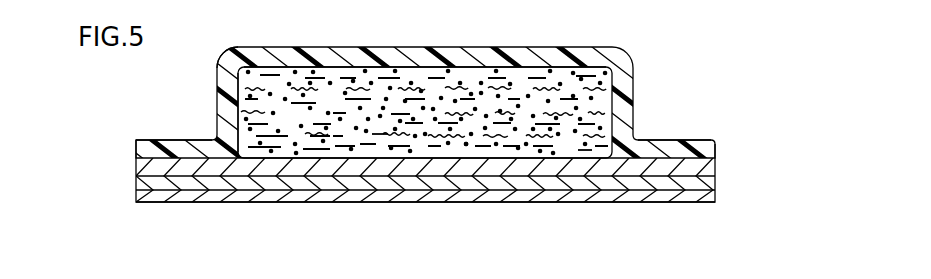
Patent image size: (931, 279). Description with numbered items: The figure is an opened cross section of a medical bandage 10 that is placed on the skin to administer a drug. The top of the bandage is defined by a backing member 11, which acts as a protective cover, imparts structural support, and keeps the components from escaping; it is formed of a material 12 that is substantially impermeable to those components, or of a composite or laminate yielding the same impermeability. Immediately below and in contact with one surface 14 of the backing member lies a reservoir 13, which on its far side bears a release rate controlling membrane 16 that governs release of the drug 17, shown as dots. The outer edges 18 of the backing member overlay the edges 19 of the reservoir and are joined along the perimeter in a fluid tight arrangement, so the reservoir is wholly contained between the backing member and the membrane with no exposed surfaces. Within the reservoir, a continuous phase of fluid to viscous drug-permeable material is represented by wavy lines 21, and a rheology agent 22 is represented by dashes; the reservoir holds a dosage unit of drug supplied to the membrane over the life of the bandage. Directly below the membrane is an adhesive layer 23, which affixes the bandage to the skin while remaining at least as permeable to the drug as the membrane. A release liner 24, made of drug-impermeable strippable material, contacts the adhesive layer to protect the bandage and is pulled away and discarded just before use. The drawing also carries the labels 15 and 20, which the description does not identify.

The medical bandage 10 is at (178, 79).
The backing member 11 is at (632, 68).
The material 12 is at (403, 47).
The reservoir 13 is at (603, 103).
The surface 14 is at (466, 70).
The bottom interface layer 15 is at (585, 150).
The release rate controlling membrane 16 is at (651, 168).
The drug 17 is at (466, 148).
The outer edges 18 is at (217, 78).
The edges 19 is at (237, 110).
The laminated base sheet 20 is at (147, 163).
The wavy lines 21 is at (372, 134).
The rheology agent 22 is at (322, 148).
The adhesive layer 23 is at (705, 182).
The release liner 24 is at (707, 197).